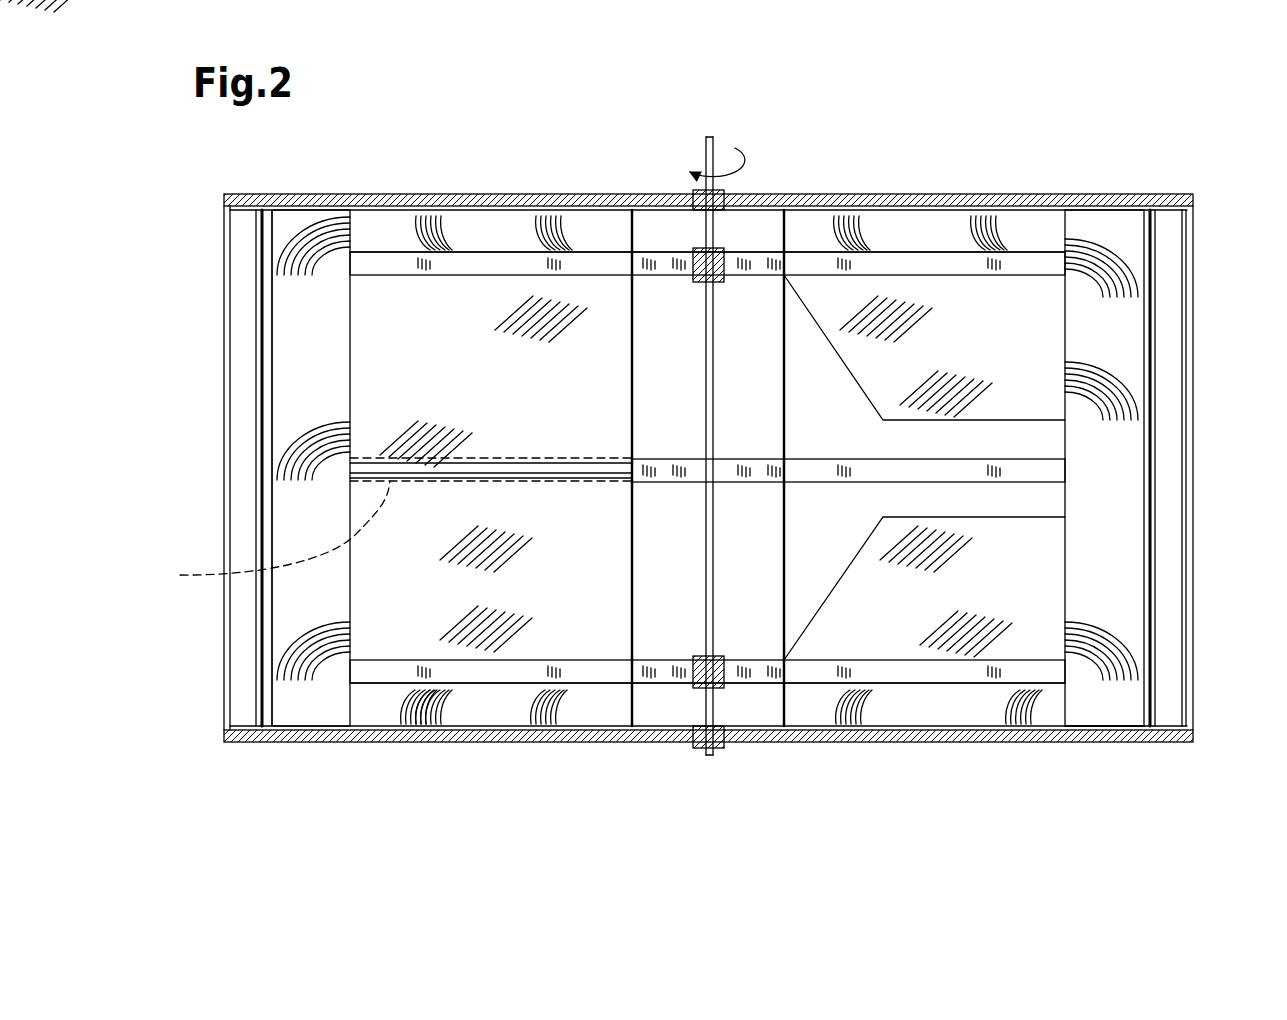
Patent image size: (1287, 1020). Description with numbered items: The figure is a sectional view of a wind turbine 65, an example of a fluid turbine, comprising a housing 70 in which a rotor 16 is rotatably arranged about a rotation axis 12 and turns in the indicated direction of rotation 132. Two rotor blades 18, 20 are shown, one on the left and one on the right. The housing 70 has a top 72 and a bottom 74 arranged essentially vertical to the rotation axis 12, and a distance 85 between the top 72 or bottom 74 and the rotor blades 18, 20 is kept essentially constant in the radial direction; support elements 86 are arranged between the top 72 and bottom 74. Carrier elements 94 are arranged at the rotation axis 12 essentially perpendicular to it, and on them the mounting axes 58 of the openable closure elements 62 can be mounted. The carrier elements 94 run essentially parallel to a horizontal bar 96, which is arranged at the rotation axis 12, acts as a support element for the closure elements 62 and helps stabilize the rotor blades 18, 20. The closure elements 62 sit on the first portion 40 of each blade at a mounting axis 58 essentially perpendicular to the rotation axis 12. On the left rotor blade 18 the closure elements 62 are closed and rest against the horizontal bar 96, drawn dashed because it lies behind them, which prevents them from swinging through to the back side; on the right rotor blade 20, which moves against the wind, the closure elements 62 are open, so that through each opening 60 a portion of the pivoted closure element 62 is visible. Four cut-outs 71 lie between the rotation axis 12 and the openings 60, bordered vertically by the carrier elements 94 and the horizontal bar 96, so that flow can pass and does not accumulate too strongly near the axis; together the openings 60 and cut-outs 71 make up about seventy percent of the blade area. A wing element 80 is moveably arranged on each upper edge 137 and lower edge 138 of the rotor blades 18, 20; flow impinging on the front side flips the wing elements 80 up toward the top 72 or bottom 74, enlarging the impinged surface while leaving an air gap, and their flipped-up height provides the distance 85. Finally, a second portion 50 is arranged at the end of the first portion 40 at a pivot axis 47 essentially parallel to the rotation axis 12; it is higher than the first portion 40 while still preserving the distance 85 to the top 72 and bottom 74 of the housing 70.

The rotation axis 12 is at (709, 135).
The rotor 16 is at (238, 640).
The rotor blade 18 is at (262, 477).
The rotor blade 20 is at (1152, 489).
The first portion 40 is at (468, 745).
The pivot axis 47 is at (352, 236).
The second portion 50 is at (297, 745).
The mounting axis 58 is at (472, 272).
The opening 60 is at (808, 400).
The openable closure element 62 is at (606, 264).
The wind turbine 65 is at (1137, 133).
The housing 70 is at (258, 188).
The cut-out 71 is at (658, 300).
The top 72 is at (392, 196).
The bottom 74 is at (1017, 744).
The wing element 80 is at (527, 262).
The distance 85 is at (232, 194).
The support element 86 is at (230, 530).
The carrier element 94 is at (590, 252).
The horizontal bar 96 is at (1230, 466).
The direction of rotation 132 is at (737, 146).
The upper edge 137 is at (453, 252).
The lower edge 138 is at (390, 685).